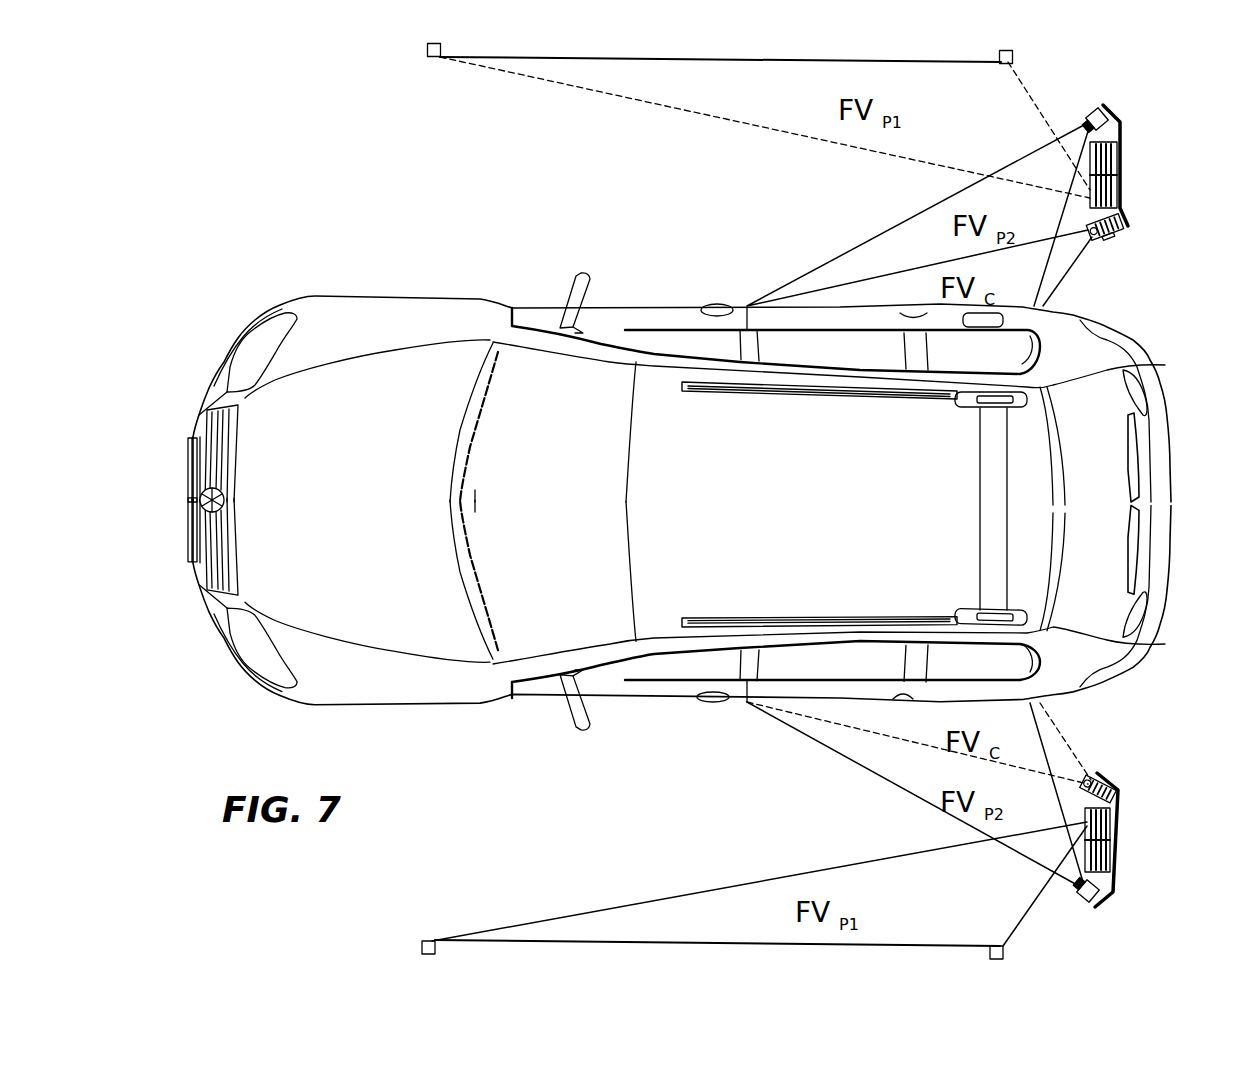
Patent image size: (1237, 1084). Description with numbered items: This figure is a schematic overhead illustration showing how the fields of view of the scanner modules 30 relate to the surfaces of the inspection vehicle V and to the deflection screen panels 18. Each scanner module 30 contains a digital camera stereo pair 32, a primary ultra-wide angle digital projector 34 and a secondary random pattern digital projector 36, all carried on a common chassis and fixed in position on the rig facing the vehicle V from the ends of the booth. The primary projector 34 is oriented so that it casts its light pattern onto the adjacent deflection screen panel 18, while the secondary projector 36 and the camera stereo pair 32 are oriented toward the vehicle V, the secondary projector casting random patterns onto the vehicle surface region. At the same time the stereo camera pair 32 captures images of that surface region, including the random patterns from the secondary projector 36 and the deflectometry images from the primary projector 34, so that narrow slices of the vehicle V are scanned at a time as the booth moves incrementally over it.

The inspection vehicle V is at (323, 299).
The deflection screen panels 18 is at (628, 58).
The scanner modules 30 is at (1122, 168).
The digital camera stereo pair 32 is at (1090, 108).
The primary ultra-wide angle digital projector 34 is at (1118, 180).
The secondary random pattern digital projector 36 is at (1110, 242).